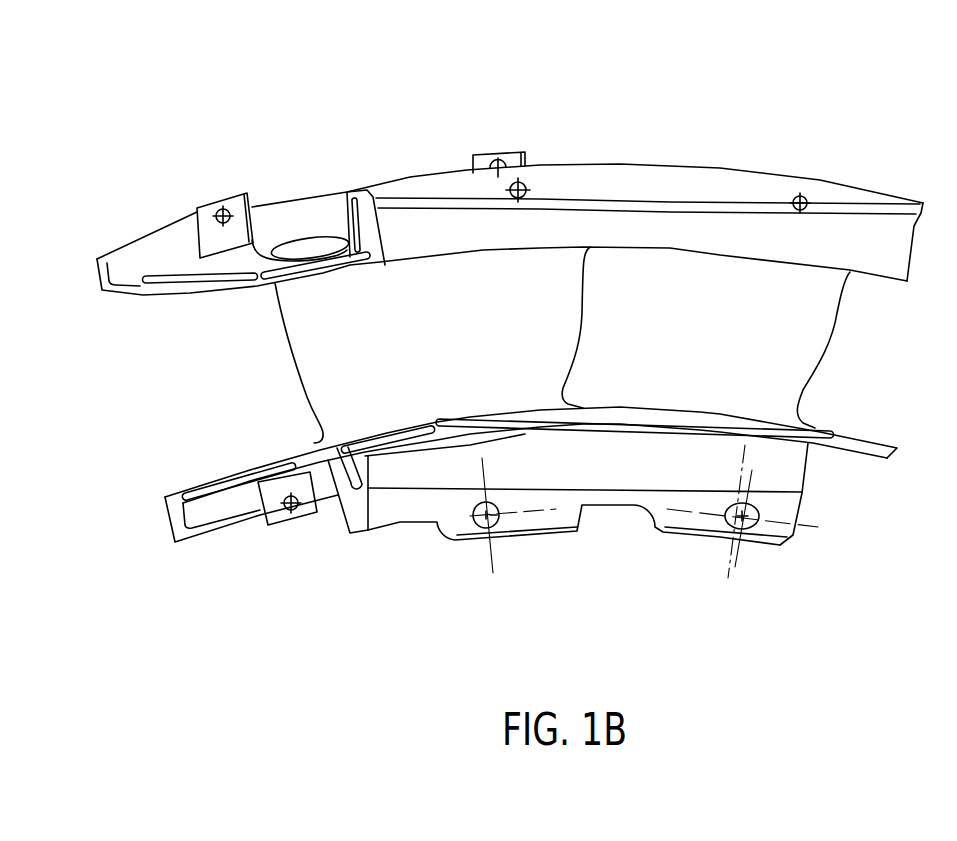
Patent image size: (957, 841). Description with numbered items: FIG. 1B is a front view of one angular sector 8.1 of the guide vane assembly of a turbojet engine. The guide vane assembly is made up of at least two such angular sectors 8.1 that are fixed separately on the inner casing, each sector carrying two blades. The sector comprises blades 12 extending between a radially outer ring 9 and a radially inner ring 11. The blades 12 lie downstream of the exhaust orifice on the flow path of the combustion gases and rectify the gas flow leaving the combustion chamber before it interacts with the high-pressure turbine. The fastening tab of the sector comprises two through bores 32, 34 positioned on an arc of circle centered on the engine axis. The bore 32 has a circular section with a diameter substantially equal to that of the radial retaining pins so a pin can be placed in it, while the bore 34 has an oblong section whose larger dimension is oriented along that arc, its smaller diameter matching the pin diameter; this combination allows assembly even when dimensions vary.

The angular sector 8.1 is at (293, 588).
The radially outer ring 9 is at (648, 183).
The radially inner ring 11 is at (403, 510).
The blade 12 is at (313, 357).
The through bore 32 is at (493, 522).
The through bore 34 is at (753, 527).